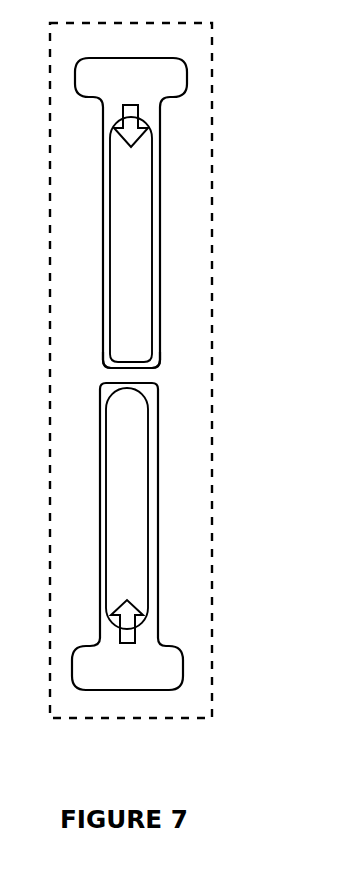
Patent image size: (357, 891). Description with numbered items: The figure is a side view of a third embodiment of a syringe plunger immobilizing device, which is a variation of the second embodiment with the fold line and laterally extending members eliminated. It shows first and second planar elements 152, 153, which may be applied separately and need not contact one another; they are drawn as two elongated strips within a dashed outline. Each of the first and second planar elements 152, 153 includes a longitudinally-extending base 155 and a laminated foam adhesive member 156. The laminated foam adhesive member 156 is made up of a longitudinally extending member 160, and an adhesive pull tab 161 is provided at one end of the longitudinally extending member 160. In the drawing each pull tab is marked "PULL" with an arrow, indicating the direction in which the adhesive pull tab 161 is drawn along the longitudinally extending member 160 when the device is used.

The first planar element 152 is at (205, 202).
The second planar element 153 is at (204, 536).
The longitudinally-extending base 155 is at (150, 360).
The laminated foam adhesive member 156 is at (135, 298).
The longitudinally extending member 160 is at (120, 548).
The adhesive pull tab 161 is at (165, 68).